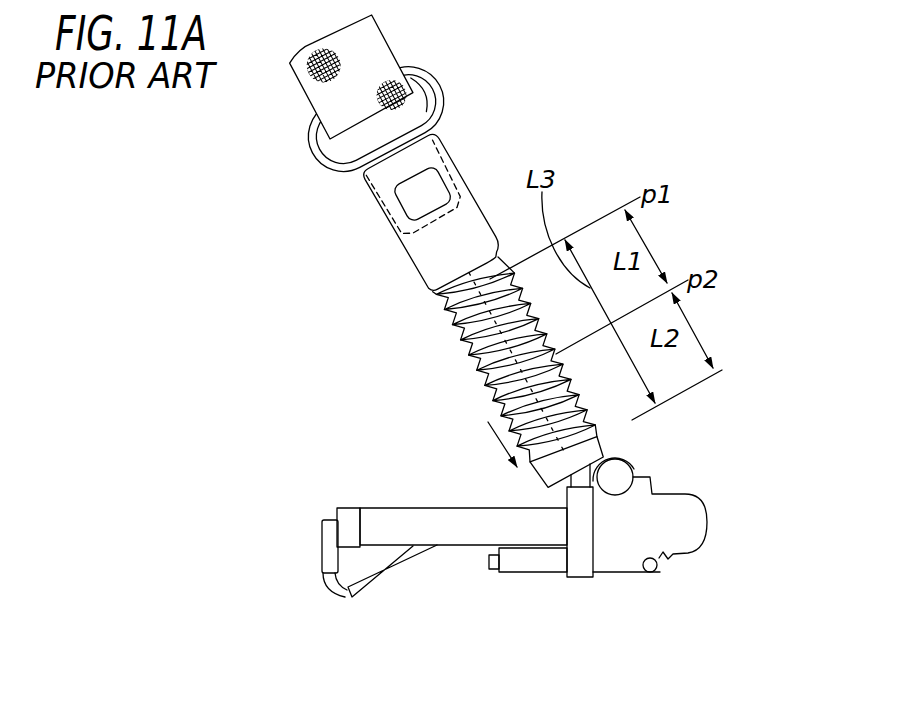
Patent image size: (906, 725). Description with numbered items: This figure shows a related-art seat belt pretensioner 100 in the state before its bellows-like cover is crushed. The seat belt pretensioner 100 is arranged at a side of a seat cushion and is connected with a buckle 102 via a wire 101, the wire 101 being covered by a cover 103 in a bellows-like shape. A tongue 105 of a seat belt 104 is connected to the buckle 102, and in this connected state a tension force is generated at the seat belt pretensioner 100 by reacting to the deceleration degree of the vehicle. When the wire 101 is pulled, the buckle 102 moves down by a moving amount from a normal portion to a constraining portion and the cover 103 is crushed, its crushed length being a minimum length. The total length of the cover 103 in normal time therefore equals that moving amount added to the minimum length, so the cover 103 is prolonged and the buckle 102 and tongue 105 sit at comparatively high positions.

The seat belt pretensioner 100 is at (676, 470).
The wire 101 is at (454, 395).
The buckle 102 is at (398, 235).
The cover 103 is at (463, 343).
The seat belt 104 is at (368, 50).
The tongue 105 is at (433, 88).